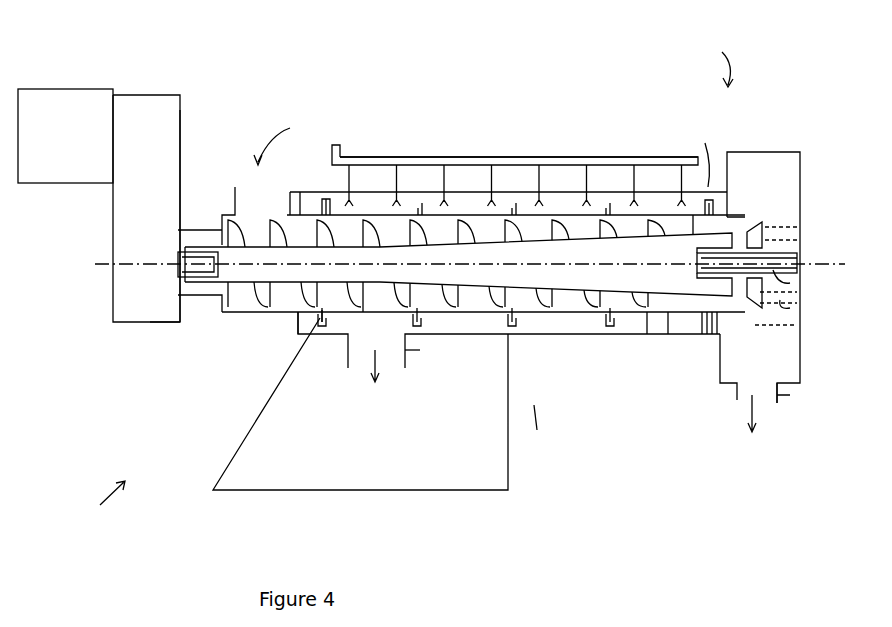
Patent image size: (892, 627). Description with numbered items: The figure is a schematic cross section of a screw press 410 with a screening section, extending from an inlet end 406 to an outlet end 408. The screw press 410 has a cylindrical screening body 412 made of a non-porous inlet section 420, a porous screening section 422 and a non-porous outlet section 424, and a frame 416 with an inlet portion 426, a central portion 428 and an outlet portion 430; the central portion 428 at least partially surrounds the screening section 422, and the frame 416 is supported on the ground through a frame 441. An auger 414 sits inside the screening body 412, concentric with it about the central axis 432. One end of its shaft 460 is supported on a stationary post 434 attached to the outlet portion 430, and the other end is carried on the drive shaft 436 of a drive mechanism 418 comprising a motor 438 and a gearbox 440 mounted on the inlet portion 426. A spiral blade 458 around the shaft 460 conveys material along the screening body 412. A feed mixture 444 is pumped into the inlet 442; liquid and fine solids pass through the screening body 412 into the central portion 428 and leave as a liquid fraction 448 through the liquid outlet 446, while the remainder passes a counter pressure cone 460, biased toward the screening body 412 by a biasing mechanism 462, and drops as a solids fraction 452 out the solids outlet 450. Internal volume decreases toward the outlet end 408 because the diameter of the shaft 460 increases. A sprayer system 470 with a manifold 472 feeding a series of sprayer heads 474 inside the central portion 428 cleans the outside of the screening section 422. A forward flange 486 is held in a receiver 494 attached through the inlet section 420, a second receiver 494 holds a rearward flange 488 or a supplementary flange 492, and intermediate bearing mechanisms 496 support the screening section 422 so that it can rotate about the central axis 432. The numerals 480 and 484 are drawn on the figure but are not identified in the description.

The inlet end 406 is at (128, 372).
The outlet end 408 is at (730, 58).
The screw press 410 is at (100, 502).
The cylindrical screening body 412 is at (282, 346).
The auger 414 is at (668, 312).
The frame 416 is at (196, 215).
The drive mechanism 418 is at (146, 95).
The non-porous inlet section 420 is at (296, 340).
The porous screening section 422 is at (562, 373).
The non-porous outlet section 424 is at (721, 367).
The inlet portion 426 is at (207, 297).
The central portion 428 is at (540, 429).
The outlet portion 430 is at (740, 150).
The central axis 432 is at (800, 256).
The stationary post 434 is at (790, 280).
The drive shaft 436 is at (193, 272).
The motor 438 is at (60, 88).
The gearbox 440 is at (183, 131).
The frame 441 is at (510, 490).
The inlet 442 is at (288, 190).
The feed mixture 444 is at (287, 138).
The liquid outlet 446 is at (430, 357).
The liquid fraction 448 is at (380, 362).
The solids outlet 450 is at (790, 396).
The solids fraction 452 is at (779, 418).
The blade 458 is at (465, 295).
The auger shaft 460 is at (292, 334).
The biasing mechanism 462 is at (790, 306).
The sprayer system 470 is at (504, 113).
The manifold 472 is at (572, 158).
The sprayer heads 474 is at (532, 197).
The flow path 480 is at (647, 312).
The slot 484 is at (366, 336).
The forward flange 486 is at (324, 326).
The rearward flange 488 is at (702, 334).
The supplementary flange 492 is at (707, 334).
The receiver 494 is at (323, 326).
The intermediate bearing mechanisms 496 is at (510, 334).